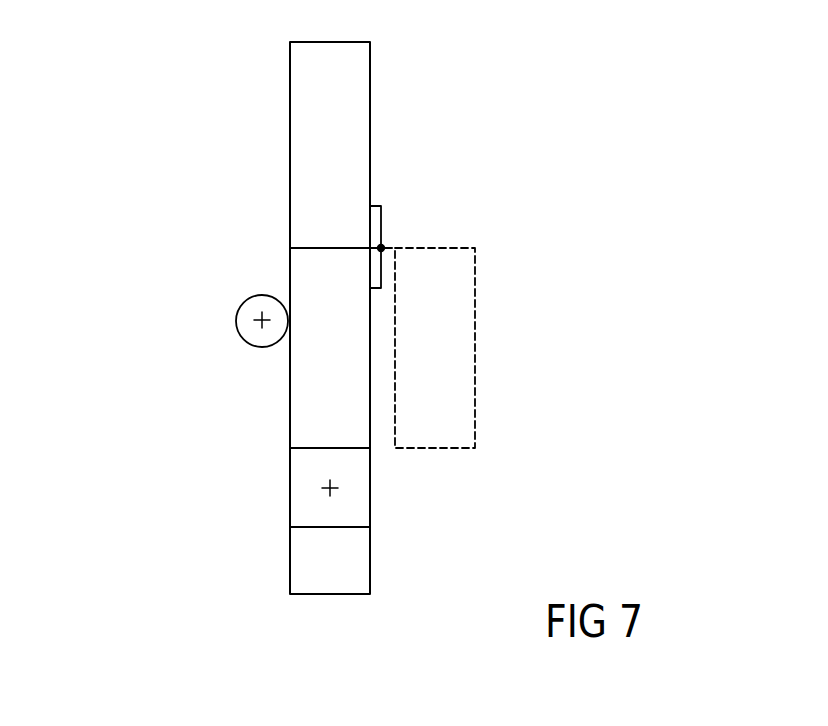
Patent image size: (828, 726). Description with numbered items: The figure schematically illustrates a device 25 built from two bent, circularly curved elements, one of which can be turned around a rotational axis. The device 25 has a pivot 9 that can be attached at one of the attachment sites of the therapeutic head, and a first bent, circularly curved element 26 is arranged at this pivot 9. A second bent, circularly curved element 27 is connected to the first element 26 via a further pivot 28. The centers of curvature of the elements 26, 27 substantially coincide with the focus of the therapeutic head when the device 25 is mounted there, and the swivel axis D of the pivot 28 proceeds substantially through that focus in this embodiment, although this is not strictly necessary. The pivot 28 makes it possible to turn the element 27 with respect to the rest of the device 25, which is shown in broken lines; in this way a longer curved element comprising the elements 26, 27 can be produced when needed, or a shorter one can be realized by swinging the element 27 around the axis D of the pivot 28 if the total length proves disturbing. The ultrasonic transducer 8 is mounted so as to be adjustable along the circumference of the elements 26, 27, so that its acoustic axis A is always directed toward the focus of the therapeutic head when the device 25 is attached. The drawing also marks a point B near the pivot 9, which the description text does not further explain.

The device 25 is at (541, 223).
The first bent, circularly curved element 26 is at (318, 400).
The second bent, circularly curved element 27 is at (310, 147).
The pivot 28 is at (376, 222).
The ultrasonic transducer 8 is at (252, 233).
The pivot 9 is at (360, 500).
The acoustic axis A is at (260, 318).
The point B (reflection position) B is at (325, 490).
The swivel axis D is at (382, 247).